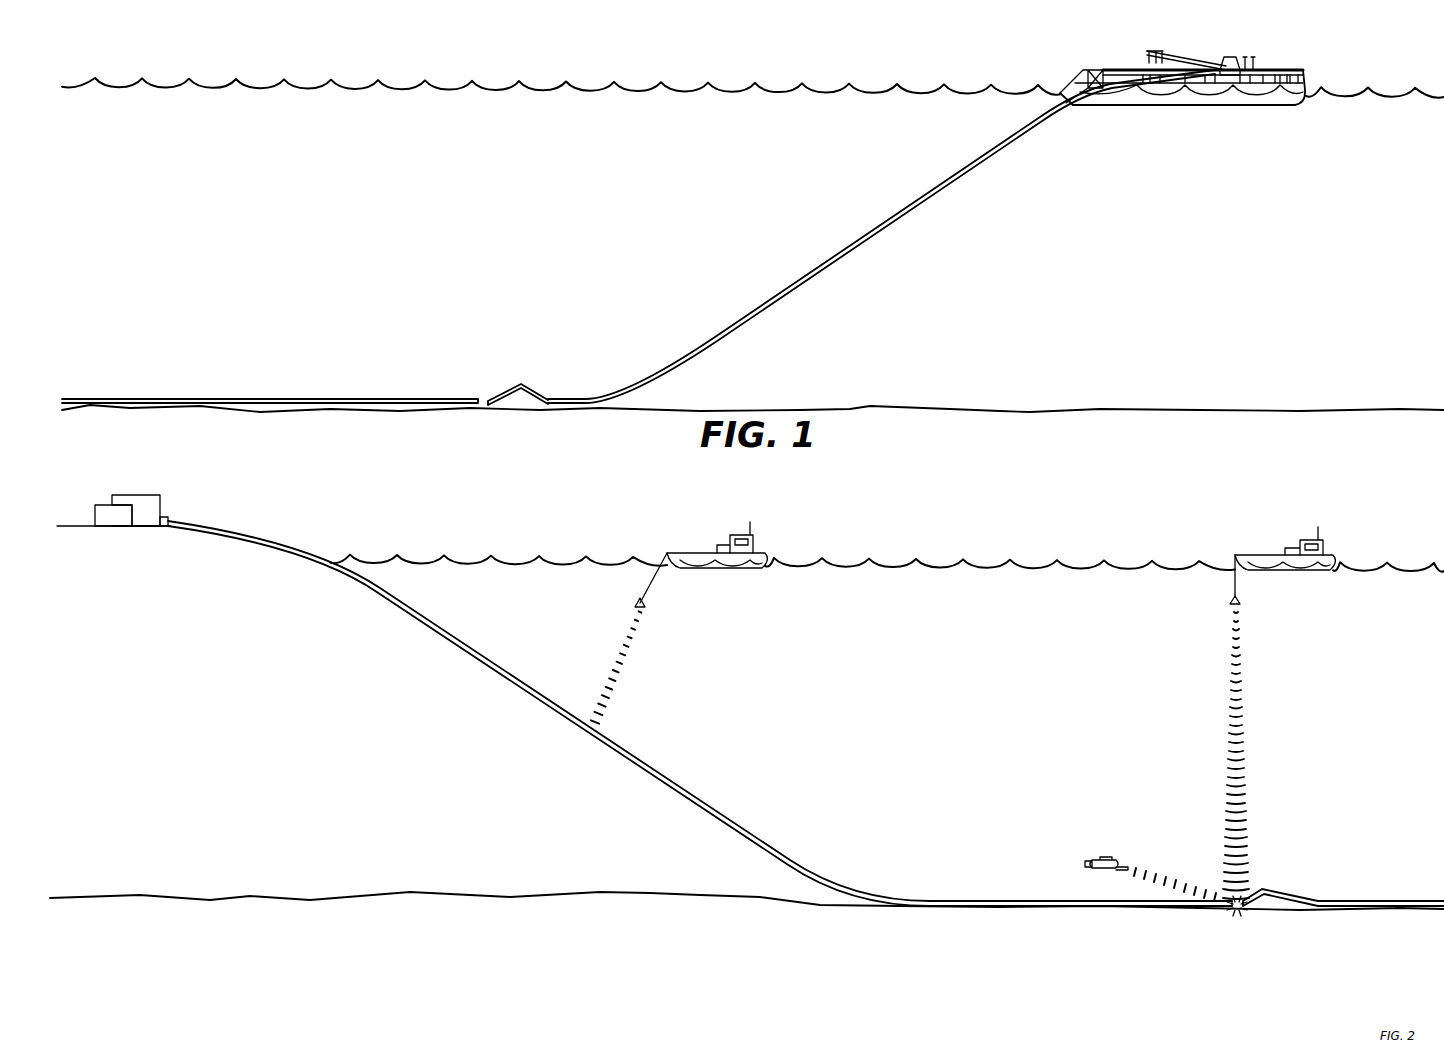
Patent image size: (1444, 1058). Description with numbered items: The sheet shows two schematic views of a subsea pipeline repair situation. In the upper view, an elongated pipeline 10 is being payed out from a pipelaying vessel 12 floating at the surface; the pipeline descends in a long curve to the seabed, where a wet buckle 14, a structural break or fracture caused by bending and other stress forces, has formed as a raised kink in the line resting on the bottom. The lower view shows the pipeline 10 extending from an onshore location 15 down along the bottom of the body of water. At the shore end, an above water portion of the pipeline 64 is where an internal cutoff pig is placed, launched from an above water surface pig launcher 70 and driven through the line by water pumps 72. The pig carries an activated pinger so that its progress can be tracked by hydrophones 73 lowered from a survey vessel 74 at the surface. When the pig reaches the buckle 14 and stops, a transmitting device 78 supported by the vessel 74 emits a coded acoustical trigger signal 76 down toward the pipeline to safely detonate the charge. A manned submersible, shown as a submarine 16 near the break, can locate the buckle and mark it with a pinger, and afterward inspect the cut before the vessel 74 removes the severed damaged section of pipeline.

In FIG. 1, the pipeline 10 is at (408, 398).
In FIG. 2, the pipeline 10 is at (530, 697).
In FIG. 1, the pipelaying vessel 12 is at (1168, 106).
In FIG. 1, the wet buckle 14 is at (542, 380).
In FIG. 2, the onshore location 15 is at (152, 535).
In FIG. 2, the submarine 16 is at (1100, 857).
In FIG. 2, the above water portion of the pipeline 64 is at (141, 486).
In FIG. 2, the pig launcher 70 is at (170, 512).
In FIG. 2, the water pumps 72 is at (113, 526).
In FIG. 2, the hydrophones 73 is at (654, 610).
In FIG. 2, the vessel 74 is at (748, 570).
In FIG. 2, the coded acoustical trigger signal 76 is at (1250, 750).
In FIG. 2, the transmitting device 78 is at (1228, 602).